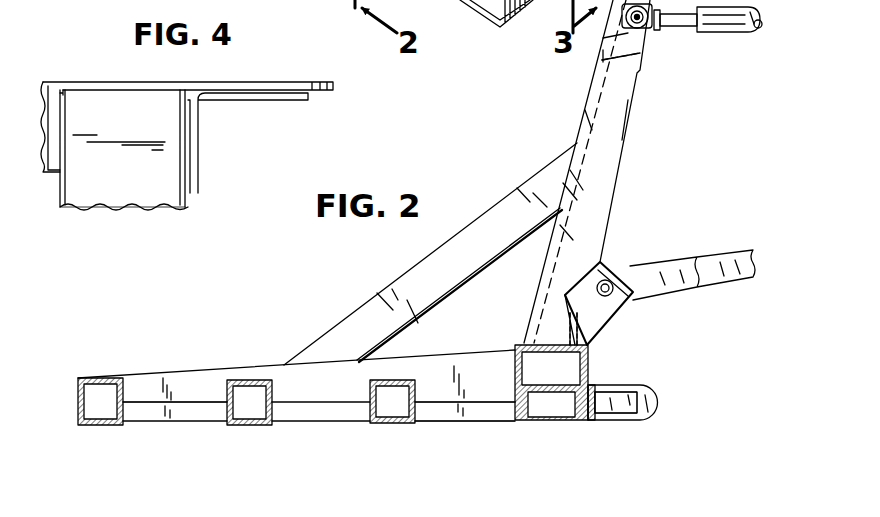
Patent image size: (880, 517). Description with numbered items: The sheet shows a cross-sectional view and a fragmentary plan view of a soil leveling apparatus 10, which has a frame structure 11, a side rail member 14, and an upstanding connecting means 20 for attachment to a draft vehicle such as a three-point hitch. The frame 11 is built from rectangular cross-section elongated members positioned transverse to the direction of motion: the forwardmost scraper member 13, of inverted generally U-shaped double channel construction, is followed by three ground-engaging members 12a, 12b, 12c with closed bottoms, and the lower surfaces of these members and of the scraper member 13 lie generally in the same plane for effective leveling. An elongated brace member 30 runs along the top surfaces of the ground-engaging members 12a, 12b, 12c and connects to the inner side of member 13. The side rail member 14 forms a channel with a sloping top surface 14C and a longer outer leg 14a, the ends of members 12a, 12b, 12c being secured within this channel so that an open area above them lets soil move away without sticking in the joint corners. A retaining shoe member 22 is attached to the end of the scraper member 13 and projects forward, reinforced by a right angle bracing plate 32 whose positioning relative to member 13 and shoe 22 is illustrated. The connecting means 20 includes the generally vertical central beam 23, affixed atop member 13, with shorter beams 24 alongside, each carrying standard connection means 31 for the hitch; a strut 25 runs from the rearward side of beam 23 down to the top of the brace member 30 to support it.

In FIG. 2, the soil leveling apparatus 10 is at (690, 174).
In FIG. 4, the frame structure 11 is at (141, 218).
In FIG. 2, the frame structure 11 is at (181, 368).
In FIG. 2, the ground-engaging member 12a is at (408, 382).
In FIG. 2, the ground-engaging member 12b is at (247, 380).
In FIG. 2, the ground-engaging member 12c is at (97, 378).
In FIG. 4, the scraper member 13 is at (93, 197).
In FIG. 2, the scraper member 13 is at (588, 367).
In FIG. 4, the side rail member 14 is at (48, 82).
In FIG. 2, the side rail member 14 is at (468, 422).
In FIG. 2, the outer leg 14a is at (437, 410).
In FIG. 4, the sloping top surface 14C is at (50, 128).
In FIG. 2, the connecting means 20 is at (605, 246).
In FIG. 4, the retaining shoe member 22 is at (287, 80).
In FIG. 2, the retaining shoe member 22 is at (657, 402).
In FIG. 2, the central beam 23 is at (605, 133).
In FIG. 2, the shorter beam 24 is at (595, 315).
In FIG. 2, the strut 25 is at (483, 223).
In FIG. 2, the brace member 30 is at (200, 388).
In FIG. 2, the standard connection 31 is at (611, 282).
In FIG. 4, the right angle bracing plate 32 is at (247, 103).
In FIG. 2, the right angle bracing plate 32 is at (613, 418).